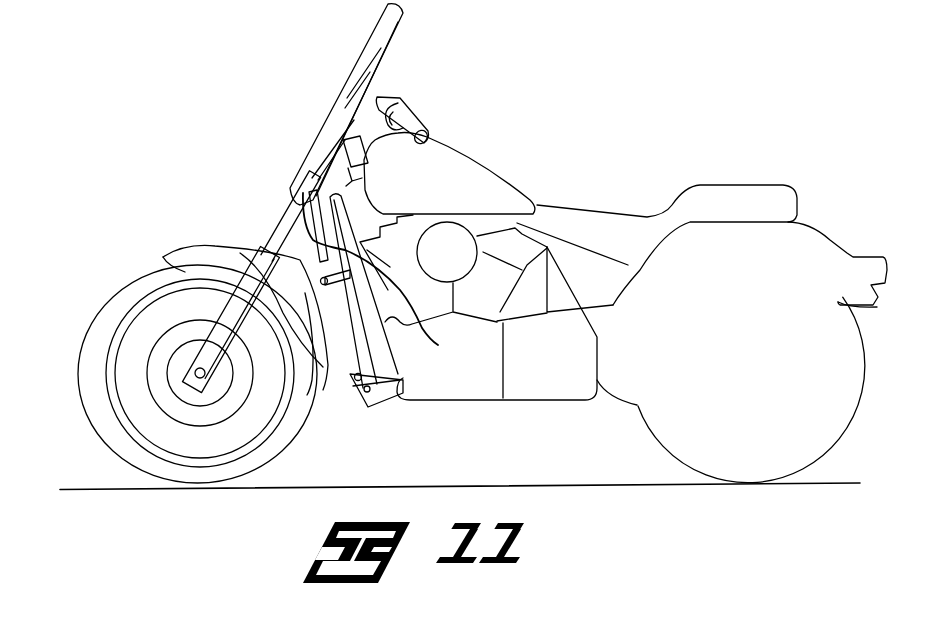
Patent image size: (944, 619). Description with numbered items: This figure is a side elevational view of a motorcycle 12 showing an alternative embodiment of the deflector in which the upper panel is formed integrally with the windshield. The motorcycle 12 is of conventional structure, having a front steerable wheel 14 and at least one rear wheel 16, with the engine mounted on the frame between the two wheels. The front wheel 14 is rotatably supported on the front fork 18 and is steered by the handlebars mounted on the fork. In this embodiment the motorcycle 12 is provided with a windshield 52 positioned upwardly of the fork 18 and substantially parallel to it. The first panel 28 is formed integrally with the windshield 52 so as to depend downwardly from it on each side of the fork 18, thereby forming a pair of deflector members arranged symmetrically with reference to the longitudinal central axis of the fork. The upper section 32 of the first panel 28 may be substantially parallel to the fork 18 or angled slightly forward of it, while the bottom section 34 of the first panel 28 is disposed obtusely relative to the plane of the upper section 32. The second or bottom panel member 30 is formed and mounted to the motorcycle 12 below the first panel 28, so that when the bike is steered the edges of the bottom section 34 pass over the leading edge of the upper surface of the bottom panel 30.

The motorcycle 12 is at (545, 149).
The front steerable wheel 14 is at (92, 420).
The rear wheel 16 is at (838, 437).
The front fork 18 is at (227, 271).
The first panel 28 is at (291, 229).
The second panel 30 is at (340, 384).
The upper section 32 is at (307, 185).
The bottom section 34 is at (393, 280).
The windshield 52 is at (377, 37).